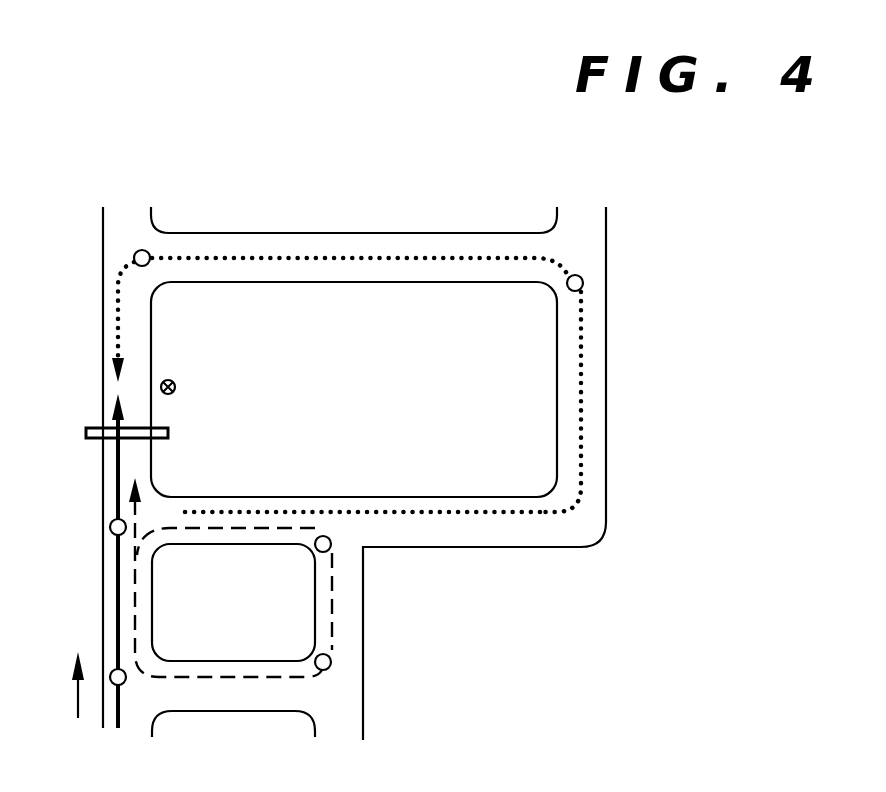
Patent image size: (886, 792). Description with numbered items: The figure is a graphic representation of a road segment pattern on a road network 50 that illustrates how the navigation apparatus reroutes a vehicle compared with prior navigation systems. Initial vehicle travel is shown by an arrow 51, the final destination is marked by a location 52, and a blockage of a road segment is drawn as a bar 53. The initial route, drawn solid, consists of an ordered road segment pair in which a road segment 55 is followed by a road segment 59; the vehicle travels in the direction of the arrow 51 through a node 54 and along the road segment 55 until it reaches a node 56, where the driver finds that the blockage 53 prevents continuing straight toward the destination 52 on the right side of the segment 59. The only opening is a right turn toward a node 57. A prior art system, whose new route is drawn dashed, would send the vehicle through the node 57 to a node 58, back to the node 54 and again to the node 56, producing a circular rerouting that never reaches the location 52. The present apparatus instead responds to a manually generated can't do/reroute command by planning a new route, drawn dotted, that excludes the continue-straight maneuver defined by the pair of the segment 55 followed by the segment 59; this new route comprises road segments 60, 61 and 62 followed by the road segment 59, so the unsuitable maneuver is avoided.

The road network 50 is at (623, 144).
The arrow 51 is at (77, 696).
The location 52 is at (176, 386).
The bar 53 is at (86, 433).
The node 54 is at (113, 668).
The road segment 55 is at (113, 607).
The node 56 is at (110, 523).
The node 57 is at (330, 549).
The node 58 is at (330, 666).
The road segment 59 is at (108, 333).
The road segment 60 is at (290, 505).
The road segment 61 is at (523, 500).
The road segment 62 is at (327, 272).